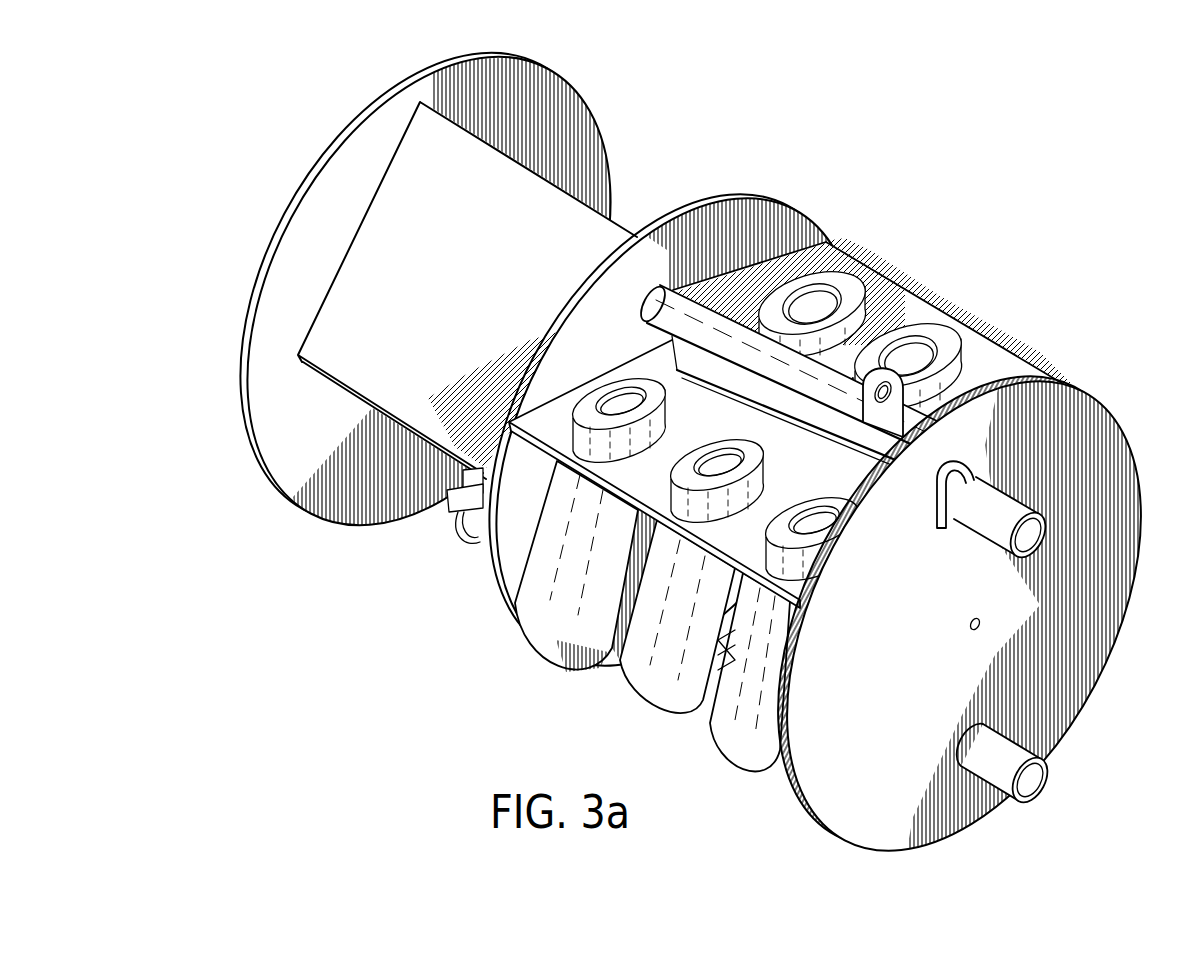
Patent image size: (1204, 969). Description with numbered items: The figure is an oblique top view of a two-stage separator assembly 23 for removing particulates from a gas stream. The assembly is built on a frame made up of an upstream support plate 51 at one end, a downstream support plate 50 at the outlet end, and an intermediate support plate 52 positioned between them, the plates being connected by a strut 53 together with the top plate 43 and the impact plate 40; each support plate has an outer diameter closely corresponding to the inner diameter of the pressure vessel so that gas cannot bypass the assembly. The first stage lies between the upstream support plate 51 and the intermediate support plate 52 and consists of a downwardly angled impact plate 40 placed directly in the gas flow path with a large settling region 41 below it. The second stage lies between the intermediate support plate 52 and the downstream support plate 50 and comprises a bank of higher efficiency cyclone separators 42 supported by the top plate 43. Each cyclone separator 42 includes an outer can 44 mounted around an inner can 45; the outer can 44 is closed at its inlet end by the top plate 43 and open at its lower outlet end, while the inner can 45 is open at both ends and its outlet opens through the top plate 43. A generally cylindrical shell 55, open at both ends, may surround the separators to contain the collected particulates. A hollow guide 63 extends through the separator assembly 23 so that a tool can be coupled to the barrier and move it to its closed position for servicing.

The separator assembly 23 is at (850, 128).
The impact plate 40 is at (552, 197).
The settling region 41 is at (370, 477).
The cyclone separator 42 is at (912, 337).
The top plate 43 is at (1000, 360).
The outer can 44 is at (757, 713).
The inner can 45 is at (817, 300).
The downstream support plate 50 is at (1133, 462).
The upstream support plate 51 is at (333, 187).
The intermediate support plate 52 is at (752, 217).
The strut 53 is at (675, 290).
The shell 55 is at (460, 527).
The hollow guide 63 is at (967, 623).